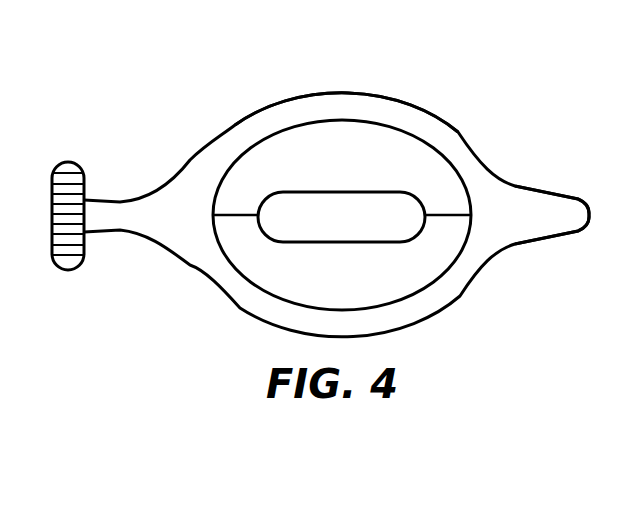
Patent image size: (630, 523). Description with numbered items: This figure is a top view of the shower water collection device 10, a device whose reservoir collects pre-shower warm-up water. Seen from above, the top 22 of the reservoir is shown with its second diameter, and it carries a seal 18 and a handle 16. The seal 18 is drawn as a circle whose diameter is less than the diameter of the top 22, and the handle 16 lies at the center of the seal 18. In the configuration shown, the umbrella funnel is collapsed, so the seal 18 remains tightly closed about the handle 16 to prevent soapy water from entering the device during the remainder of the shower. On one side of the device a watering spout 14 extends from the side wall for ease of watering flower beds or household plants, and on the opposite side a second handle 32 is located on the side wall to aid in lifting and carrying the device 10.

The shower water collection device 10 is at (190, 83).
The watering spout 14 is at (68, 161).
The handle 16 is at (326, 224).
The seal 18 is at (326, 172).
The top 22 is at (438, 122).
The second handle 32 is at (566, 208).